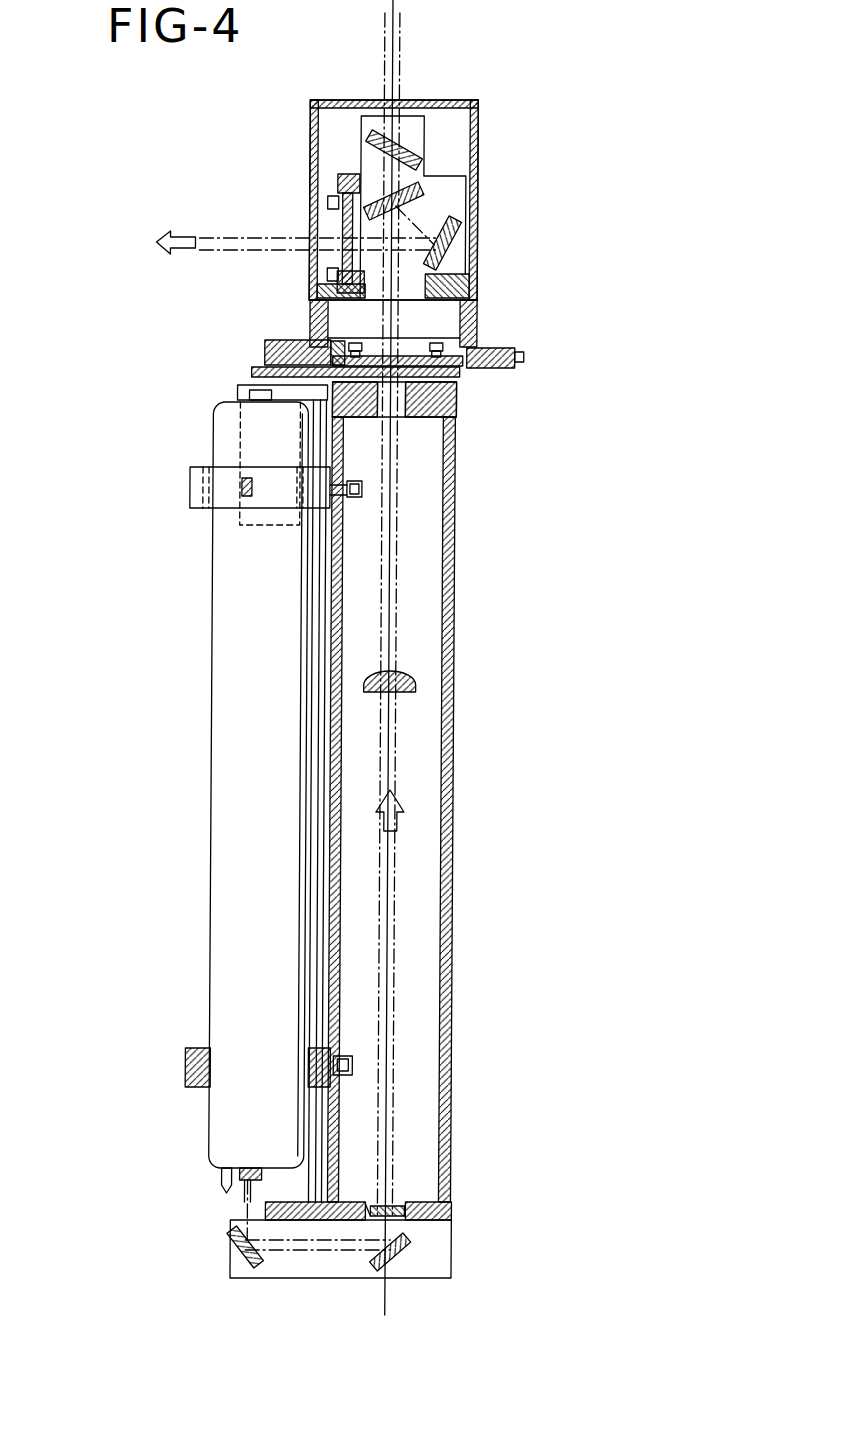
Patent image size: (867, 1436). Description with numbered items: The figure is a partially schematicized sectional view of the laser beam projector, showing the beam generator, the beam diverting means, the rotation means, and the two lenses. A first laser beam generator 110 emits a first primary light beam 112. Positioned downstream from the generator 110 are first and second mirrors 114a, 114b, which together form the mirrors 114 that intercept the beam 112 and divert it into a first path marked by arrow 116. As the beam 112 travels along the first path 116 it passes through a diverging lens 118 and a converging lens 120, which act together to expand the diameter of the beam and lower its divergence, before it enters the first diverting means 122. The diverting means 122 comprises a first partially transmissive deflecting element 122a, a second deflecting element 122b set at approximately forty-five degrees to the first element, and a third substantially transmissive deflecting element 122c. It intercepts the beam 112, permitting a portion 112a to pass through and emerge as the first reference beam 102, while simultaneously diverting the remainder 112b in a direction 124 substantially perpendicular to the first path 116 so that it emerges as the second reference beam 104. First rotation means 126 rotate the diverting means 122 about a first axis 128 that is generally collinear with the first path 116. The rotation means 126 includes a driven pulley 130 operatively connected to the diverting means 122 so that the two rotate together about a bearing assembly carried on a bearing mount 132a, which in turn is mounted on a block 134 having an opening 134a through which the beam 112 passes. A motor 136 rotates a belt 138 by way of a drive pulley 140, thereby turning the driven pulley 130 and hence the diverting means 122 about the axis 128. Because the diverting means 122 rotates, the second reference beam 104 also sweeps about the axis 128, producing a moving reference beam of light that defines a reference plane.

The first reference beam 102 is at (389, 657).
The second reference beam 104 is at (317, 1245).
The first laser beam generator 110 is at (214, 719).
The first primary light beam 112 is at (402, 948).
The portion of the first primary beam 112a is at (400, 72).
The remainder of the first primary beam 112b is at (262, 235).
The mirrors 114 is at (340, 1249).
The first mirror 114a is at (234, 1251).
The second mirror 114b is at (399, 1237).
The first path 116 is at (392, 826).
The diverging lens 118 is at (396, 1222).
The converging lens 120 is at (418, 681).
The first diverting means 122 is at (288, 136).
The first partially transmissive deflecting element 122a is at (421, 194).
The second deflecting element 122b is at (472, 240).
The third substantially transmissive deflecting element 122c is at (376, 138).
The direction 124 is at (160, 247).
The first rotation means 126 is at (128, 351).
The first axis 128 is at (399, 547).
The driven pulley 130 is at (323, 376).
The bearing mount 132a is at (445, 340).
The block 134 is at (459, 393).
The opening 134a is at (402, 418).
The motor 136 is at (240, 389).
The belt 138 is at (263, 351).
The drive pulley 140 is at (283, 341).